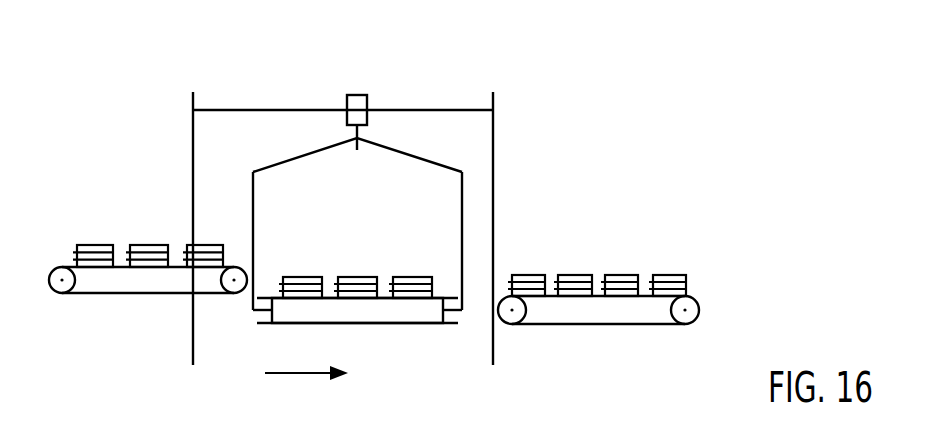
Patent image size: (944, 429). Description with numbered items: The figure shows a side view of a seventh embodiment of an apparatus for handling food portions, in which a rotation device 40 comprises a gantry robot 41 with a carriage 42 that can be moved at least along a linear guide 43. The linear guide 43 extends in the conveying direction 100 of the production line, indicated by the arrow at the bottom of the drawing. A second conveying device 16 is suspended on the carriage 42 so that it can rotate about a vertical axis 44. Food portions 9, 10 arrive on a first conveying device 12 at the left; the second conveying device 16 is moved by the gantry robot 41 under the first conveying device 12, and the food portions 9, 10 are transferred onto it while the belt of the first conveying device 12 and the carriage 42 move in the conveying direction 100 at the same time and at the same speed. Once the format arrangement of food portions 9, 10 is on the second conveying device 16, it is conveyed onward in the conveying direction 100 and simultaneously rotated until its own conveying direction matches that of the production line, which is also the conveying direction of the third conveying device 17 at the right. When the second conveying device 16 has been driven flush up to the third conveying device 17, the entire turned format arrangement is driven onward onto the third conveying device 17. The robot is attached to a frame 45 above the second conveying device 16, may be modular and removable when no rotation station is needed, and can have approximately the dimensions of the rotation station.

The food portion 9 is at (95, 250).
The food portion 10 is at (576, 280).
The first conveying device 12 is at (119, 212).
The second conveying device 16 is at (327, 242).
The third conveying device 17 is at (599, 242).
The rotation device 40 is at (368, 170).
The gantry robot 41 is at (387, 207).
The carriage 42 is at (351, 100).
The linear guide 43 is at (391, 108).
The vertical axis 44 is at (360, 138).
The frame 45 is at (494, 102).
The conveying direction 100 is at (306, 387).